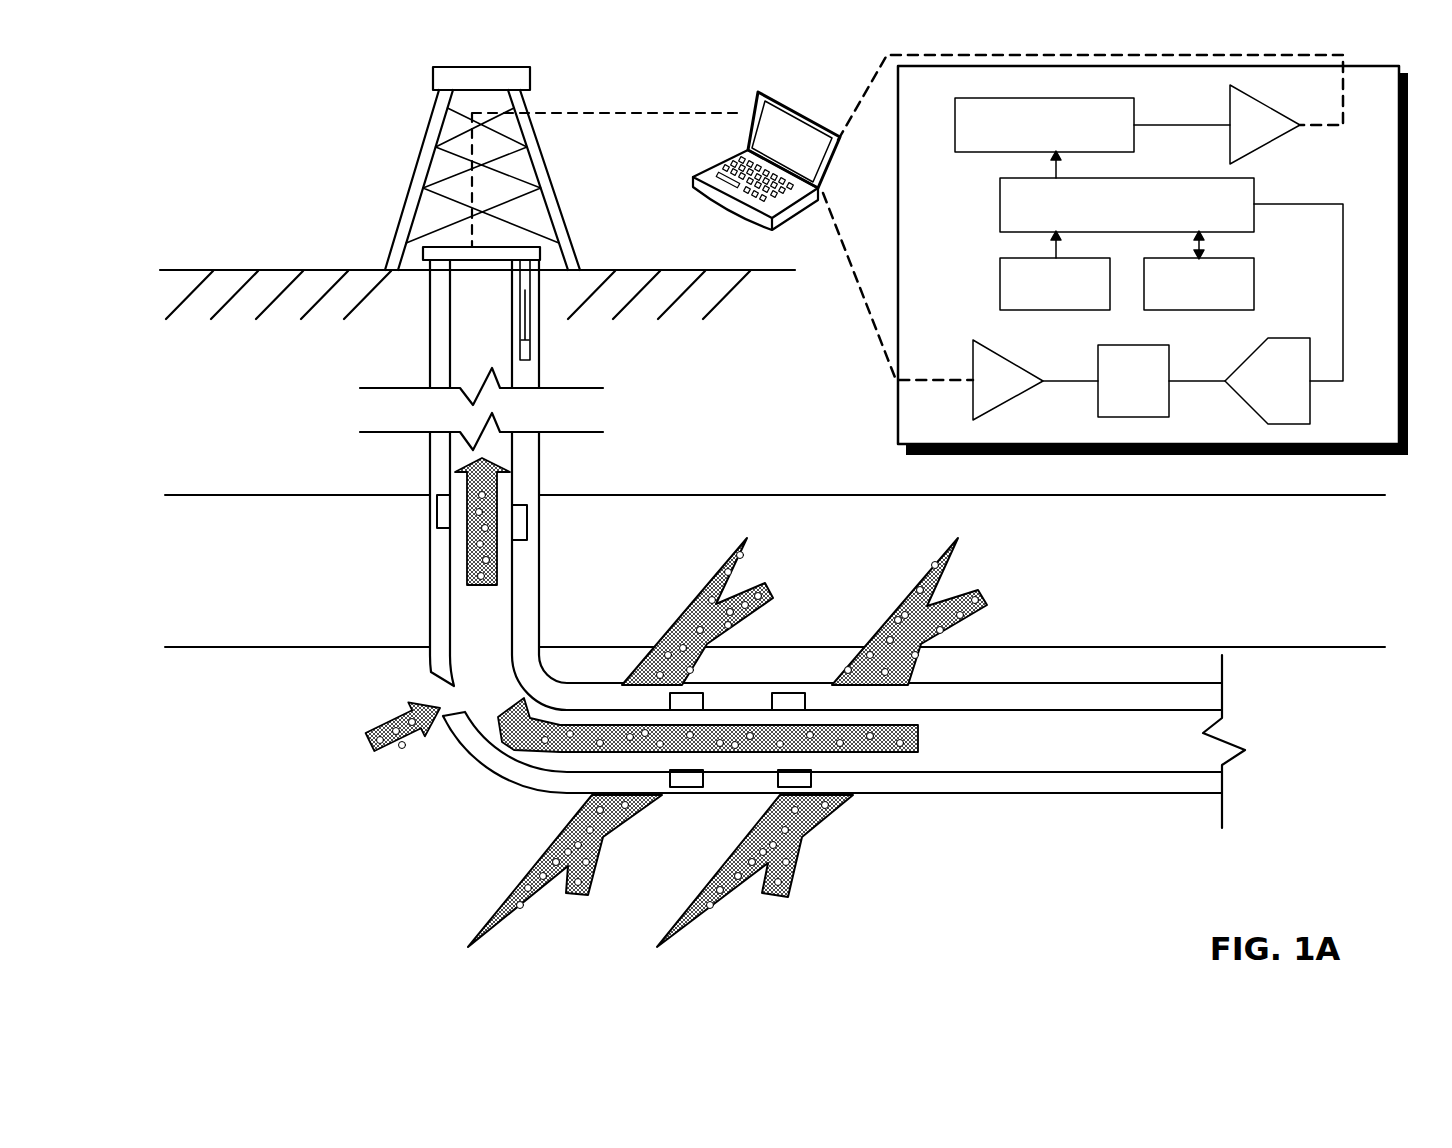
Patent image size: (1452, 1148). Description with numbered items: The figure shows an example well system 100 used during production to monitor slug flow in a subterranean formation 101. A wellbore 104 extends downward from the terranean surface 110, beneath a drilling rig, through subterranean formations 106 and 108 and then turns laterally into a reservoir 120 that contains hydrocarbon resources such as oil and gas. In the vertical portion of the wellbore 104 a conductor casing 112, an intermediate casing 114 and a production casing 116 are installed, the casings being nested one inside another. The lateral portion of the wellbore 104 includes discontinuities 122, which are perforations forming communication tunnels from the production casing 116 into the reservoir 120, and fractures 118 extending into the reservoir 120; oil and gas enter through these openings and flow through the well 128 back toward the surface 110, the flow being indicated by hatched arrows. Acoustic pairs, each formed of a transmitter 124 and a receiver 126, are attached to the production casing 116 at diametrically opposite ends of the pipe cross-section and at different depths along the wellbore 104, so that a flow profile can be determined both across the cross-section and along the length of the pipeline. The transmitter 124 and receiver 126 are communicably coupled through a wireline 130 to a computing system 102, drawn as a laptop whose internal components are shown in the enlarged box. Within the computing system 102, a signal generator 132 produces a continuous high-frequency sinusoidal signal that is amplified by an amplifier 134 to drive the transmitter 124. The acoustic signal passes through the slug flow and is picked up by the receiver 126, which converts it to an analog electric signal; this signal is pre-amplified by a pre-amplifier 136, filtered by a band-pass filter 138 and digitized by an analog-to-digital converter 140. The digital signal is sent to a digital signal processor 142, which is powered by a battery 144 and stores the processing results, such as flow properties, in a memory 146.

The well system 100 is at (268, 125).
The subterranean formation 101 is at (176, 370).
The computing system 102 is at (782, 99).
The wellbore 104 is at (477, 373).
The subterranean formation 106 is at (268, 523).
The subterranean formation 108 is at (262, 662).
The terranean surface 110 is at (285, 270).
The conductor casing 112 is at (533, 322).
The intermediate casing 114 is at (533, 350).
The production casing 116 is at (520, 450).
The fractures 118 is at (677, 640).
The reservoir 120 is at (816, 530).
The discontinuities 122 is at (440, 696).
The transmitter 124 is at (435, 513).
The receiver 126 is at (527, 520).
The well 128 is at (464, 622).
The wireline 130 is at (567, 115).
The signal generator 132 is at (1026, 137).
The amplifier 134 is at (1233, 137).
The pre-amplifier 136 is at (978, 393).
The band-pass filter 138 is at (1114, 393).
The analog-to-digital converter 140 is at (1256, 393).
The digital signal processor 142 is at (1108, 216).
The battery 144 is at (1036, 296).
The memory 146 is at (1181, 296).